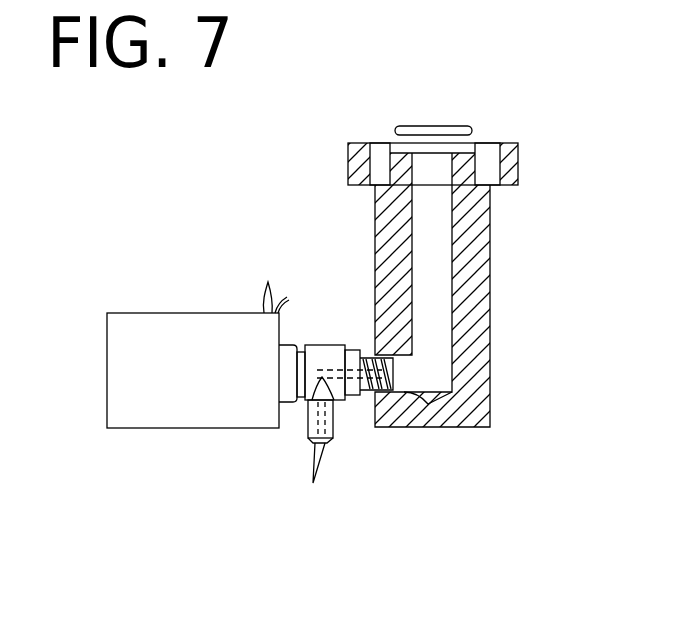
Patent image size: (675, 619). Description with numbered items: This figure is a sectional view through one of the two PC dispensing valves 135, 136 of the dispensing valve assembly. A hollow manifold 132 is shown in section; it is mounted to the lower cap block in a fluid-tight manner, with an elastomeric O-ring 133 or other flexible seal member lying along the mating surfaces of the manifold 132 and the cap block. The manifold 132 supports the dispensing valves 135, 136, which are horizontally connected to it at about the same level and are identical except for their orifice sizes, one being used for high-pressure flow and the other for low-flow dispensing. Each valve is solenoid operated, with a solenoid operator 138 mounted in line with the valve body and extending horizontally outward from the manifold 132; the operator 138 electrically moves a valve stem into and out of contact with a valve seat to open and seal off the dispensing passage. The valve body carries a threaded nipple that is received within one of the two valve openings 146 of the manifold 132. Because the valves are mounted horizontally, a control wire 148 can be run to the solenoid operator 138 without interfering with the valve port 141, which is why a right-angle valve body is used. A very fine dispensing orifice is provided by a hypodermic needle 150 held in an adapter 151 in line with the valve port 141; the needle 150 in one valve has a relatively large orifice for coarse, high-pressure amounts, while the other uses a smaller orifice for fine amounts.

The manifold 132 is at (473, 265).
The O-ring 133 is at (473, 132).
The dispensing valve 135 is at (328, 359).
The dispensing valve 136 is at (367, 252).
The solenoid operator 138 is at (215, 382).
The valve port 141 is at (337, 400).
The valve opening 146 is at (397, 380).
The control wire 148 is at (265, 297).
The hypodermic needle 150 is at (312, 482).
The adapter 151 is at (303, 424).